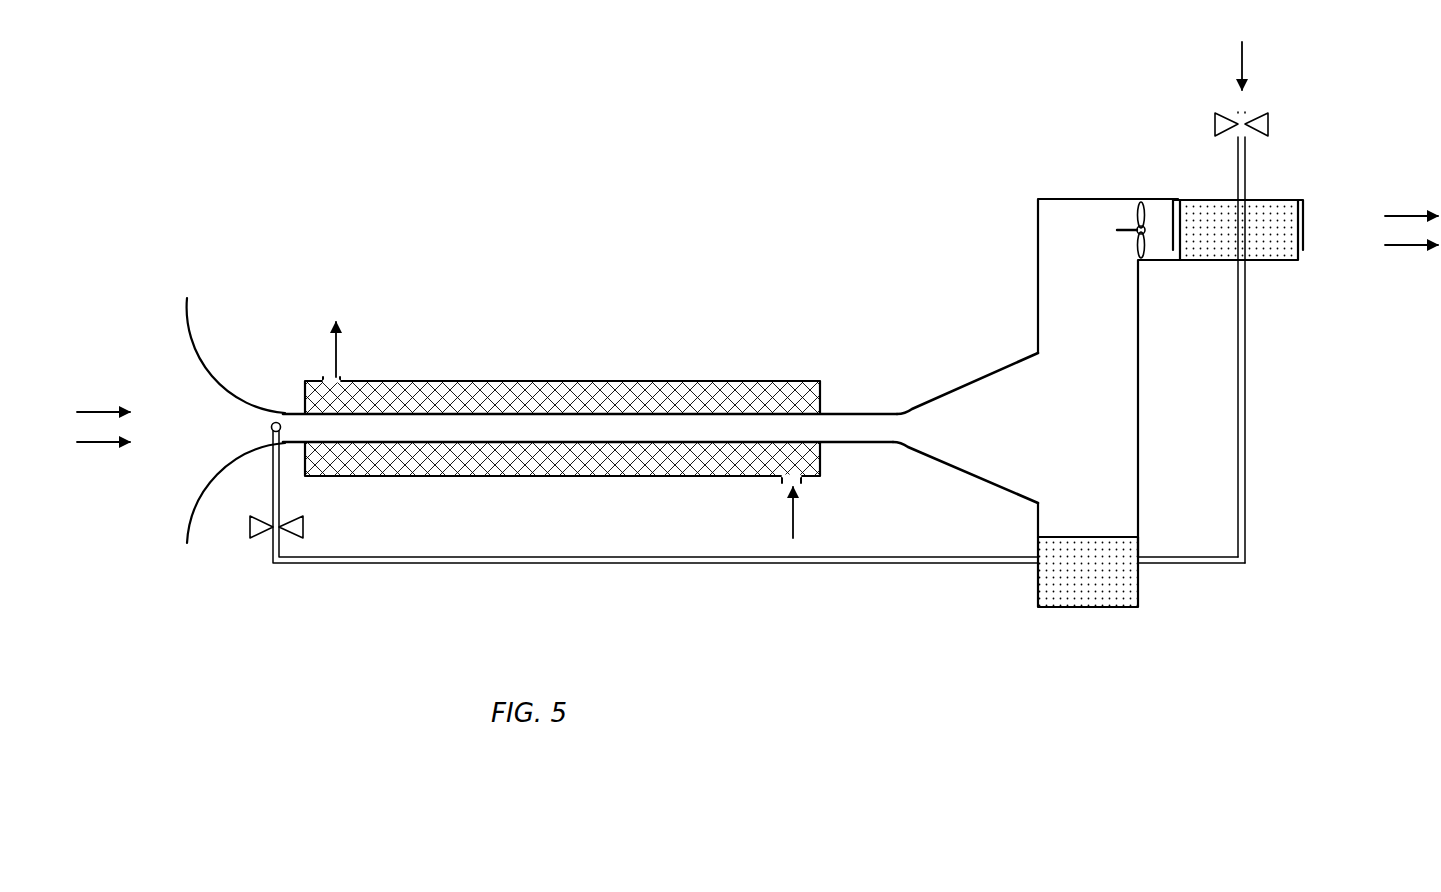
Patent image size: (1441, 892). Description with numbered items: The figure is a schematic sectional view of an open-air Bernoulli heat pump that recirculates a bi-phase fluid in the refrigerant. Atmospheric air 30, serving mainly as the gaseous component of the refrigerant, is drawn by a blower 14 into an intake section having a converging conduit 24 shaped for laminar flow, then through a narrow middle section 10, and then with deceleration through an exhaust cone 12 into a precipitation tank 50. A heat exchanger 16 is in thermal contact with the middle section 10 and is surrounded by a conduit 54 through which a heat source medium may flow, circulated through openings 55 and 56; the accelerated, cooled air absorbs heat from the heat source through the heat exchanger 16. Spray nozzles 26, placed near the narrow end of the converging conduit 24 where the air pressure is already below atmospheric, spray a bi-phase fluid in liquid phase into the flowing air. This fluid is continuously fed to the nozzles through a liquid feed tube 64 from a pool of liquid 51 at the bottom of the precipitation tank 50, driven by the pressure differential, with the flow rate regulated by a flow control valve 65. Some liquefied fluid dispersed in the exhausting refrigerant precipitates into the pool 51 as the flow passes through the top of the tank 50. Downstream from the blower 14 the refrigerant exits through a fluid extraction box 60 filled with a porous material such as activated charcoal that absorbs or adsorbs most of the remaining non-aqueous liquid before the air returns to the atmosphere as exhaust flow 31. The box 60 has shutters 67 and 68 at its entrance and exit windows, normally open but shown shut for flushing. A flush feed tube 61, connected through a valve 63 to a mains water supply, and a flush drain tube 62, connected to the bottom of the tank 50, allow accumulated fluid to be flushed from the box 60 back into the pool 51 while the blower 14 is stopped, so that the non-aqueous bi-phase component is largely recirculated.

The middle section 10 is at (860, 410).
The exhaust cone 12 is at (970, 380).
The blower 14 is at (1140, 200).
The heat exchanger 16 is at (640, 393).
The converging conduit 24 is at (213, 343).
The spray nozzles 26 is at (287, 410).
The atmospheric air 30 is at (98, 410).
The outlet air flow 31 is at (1402, 250).
The precipitation tank 50 is at (1138, 417).
The pool of liquid 51 is at (1037, 588).
The conduit 54 is at (497, 380).
The opening 55 is at (788, 480).
The opening 56 is at (343, 376).
The fluid extraction box 60 is at (1275, 250).
The flush feed tube 61 is at (1252, 168).
The flush drain tube 62 is at (1247, 477).
The valve 63 is at (1268, 122).
The liquid feed tube 64 is at (430, 565).
The flow control valve 65 is at (250, 527).
The shutter 67 is at (1173, 200).
The shutter 68 is at (1305, 215).